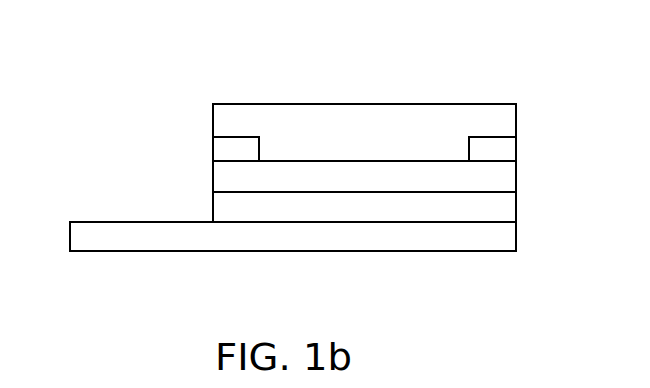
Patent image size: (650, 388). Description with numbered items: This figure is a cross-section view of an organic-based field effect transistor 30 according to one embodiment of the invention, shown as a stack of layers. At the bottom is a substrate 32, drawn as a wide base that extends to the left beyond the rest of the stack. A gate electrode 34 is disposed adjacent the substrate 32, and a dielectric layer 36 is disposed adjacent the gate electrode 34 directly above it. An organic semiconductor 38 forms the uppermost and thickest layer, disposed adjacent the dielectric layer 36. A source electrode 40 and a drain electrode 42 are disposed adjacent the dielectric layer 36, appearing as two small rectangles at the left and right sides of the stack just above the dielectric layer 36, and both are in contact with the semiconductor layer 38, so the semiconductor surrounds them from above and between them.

The organic-based field effect transistor 30 is at (494, 70).
The substrate 32 is at (113, 235).
The gate electrode 34 is at (505, 210).
The dielectric layer 36 is at (505, 176).
The organic semiconductor 38 is at (418, 118).
The source electrode 40 is at (222, 148).
The drain electrode 42 is at (505, 148).